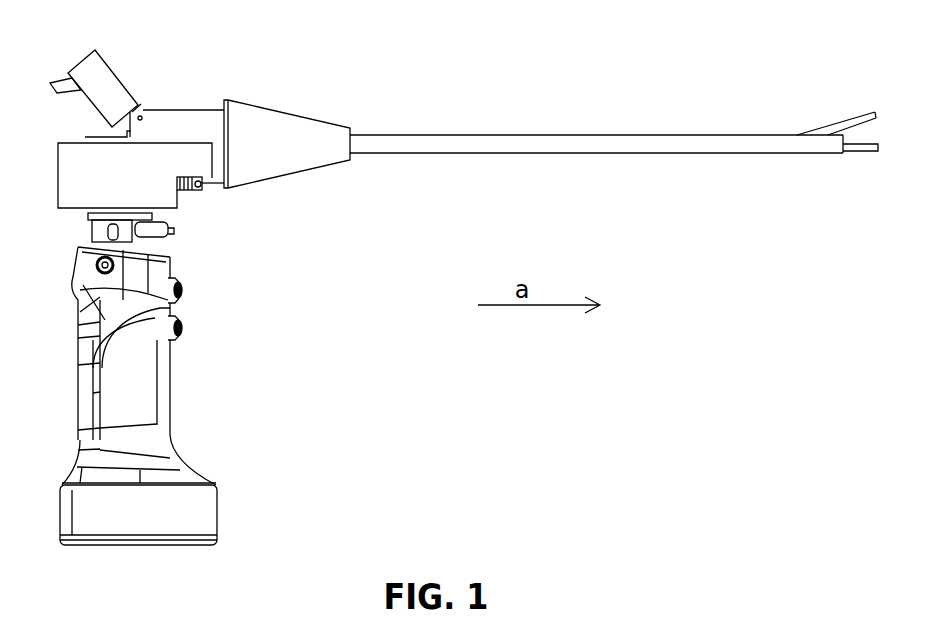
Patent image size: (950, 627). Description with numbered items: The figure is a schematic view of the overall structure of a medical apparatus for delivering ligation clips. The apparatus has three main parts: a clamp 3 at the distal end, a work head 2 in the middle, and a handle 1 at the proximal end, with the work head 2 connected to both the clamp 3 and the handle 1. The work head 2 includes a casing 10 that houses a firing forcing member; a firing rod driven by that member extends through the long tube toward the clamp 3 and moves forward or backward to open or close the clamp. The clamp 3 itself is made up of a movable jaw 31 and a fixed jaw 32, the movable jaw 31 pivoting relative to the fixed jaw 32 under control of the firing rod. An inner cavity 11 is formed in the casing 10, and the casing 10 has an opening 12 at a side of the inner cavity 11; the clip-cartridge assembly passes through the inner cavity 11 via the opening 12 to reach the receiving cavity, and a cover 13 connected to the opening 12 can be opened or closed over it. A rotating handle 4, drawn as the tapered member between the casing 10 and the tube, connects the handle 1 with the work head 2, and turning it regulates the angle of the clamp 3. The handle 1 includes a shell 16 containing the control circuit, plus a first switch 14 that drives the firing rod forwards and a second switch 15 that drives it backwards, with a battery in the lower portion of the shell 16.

The handle 1 is at (139, 379).
The work head 2 is at (600, 152).
The clamp 3 is at (859, 137).
The rotating handle 4 is at (280, 132).
The casing 10 is at (163, 178).
The inner cavity 11 is at (78, 175).
The opening 12 is at (90, 128).
The cover 13 is at (102, 77).
The first switch 14 is at (183, 285).
The second switch 15 is at (183, 326).
The shell 16 is at (84, 393).
The movable jaw 31 is at (844, 113).
The fixed jaw 32 is at (848, 155).